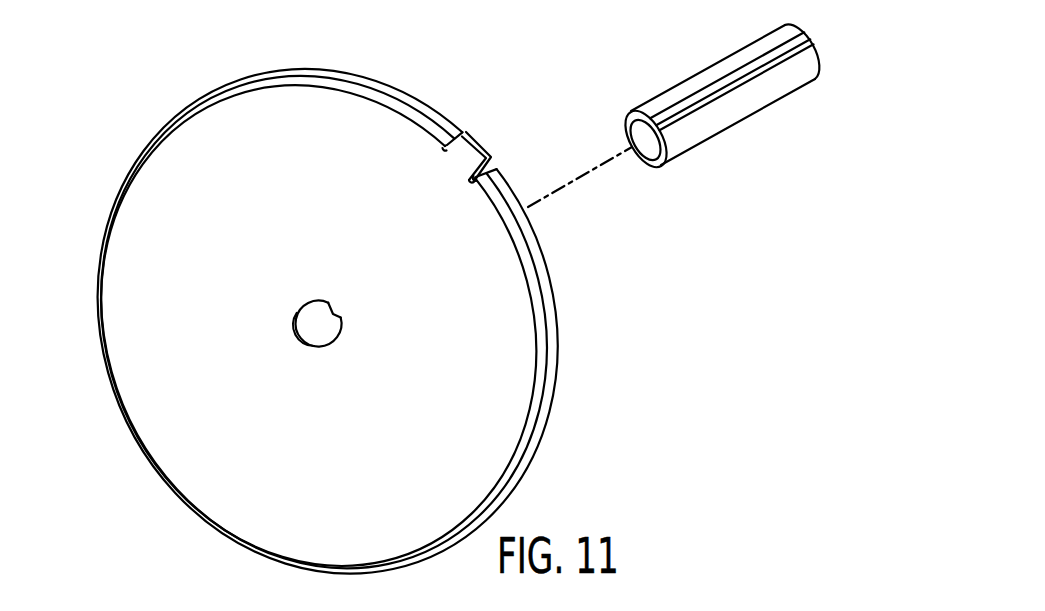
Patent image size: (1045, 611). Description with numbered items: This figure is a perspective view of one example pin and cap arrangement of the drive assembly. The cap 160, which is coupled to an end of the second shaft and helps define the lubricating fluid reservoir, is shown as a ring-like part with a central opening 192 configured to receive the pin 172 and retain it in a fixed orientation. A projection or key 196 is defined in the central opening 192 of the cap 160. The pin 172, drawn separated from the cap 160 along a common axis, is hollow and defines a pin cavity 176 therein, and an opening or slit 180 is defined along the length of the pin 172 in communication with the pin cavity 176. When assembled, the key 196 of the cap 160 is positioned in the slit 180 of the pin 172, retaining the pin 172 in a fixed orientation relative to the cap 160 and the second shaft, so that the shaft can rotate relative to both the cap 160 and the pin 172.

The cap 160 is at (158, 493).
The pin 172 is at (768, 116).
The pin cavity 176 is at (628, 158).
The slit 180 is at (800, 32).
The central opening 192 is at (297, 335).
The key 196 is at (300, 318).